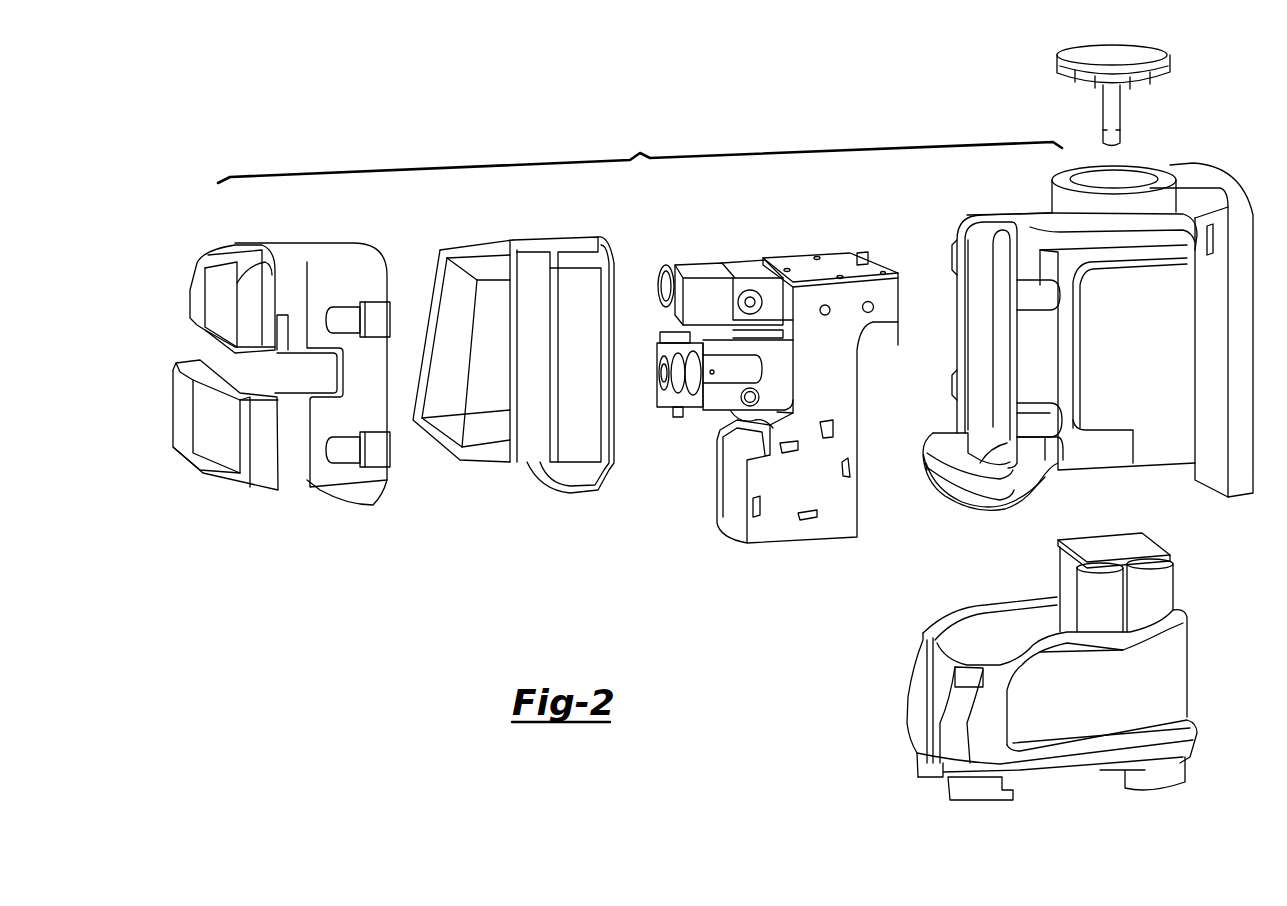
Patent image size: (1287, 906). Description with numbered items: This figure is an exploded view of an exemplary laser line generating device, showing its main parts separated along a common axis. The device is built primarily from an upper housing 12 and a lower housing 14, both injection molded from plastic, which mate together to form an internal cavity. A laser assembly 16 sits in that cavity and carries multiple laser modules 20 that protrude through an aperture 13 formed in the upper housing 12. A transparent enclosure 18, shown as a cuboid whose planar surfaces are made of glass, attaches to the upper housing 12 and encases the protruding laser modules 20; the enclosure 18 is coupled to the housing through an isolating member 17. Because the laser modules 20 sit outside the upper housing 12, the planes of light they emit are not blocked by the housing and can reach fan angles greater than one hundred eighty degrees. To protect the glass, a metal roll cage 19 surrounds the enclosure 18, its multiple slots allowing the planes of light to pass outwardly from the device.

The upper housing 12 is at (1005, 212).
The aperture 13 is at (945, 260).
The lower housing 14 is at (1183, 670).
The laser assembly 16 is at (759, 551).
The isolating member 17 is at (556, 240).
The transparent enclosure 18 is at (477, 462).
The metal roll cage 19 is at (318, 243).
The laser modules 20 is at (672, 262).